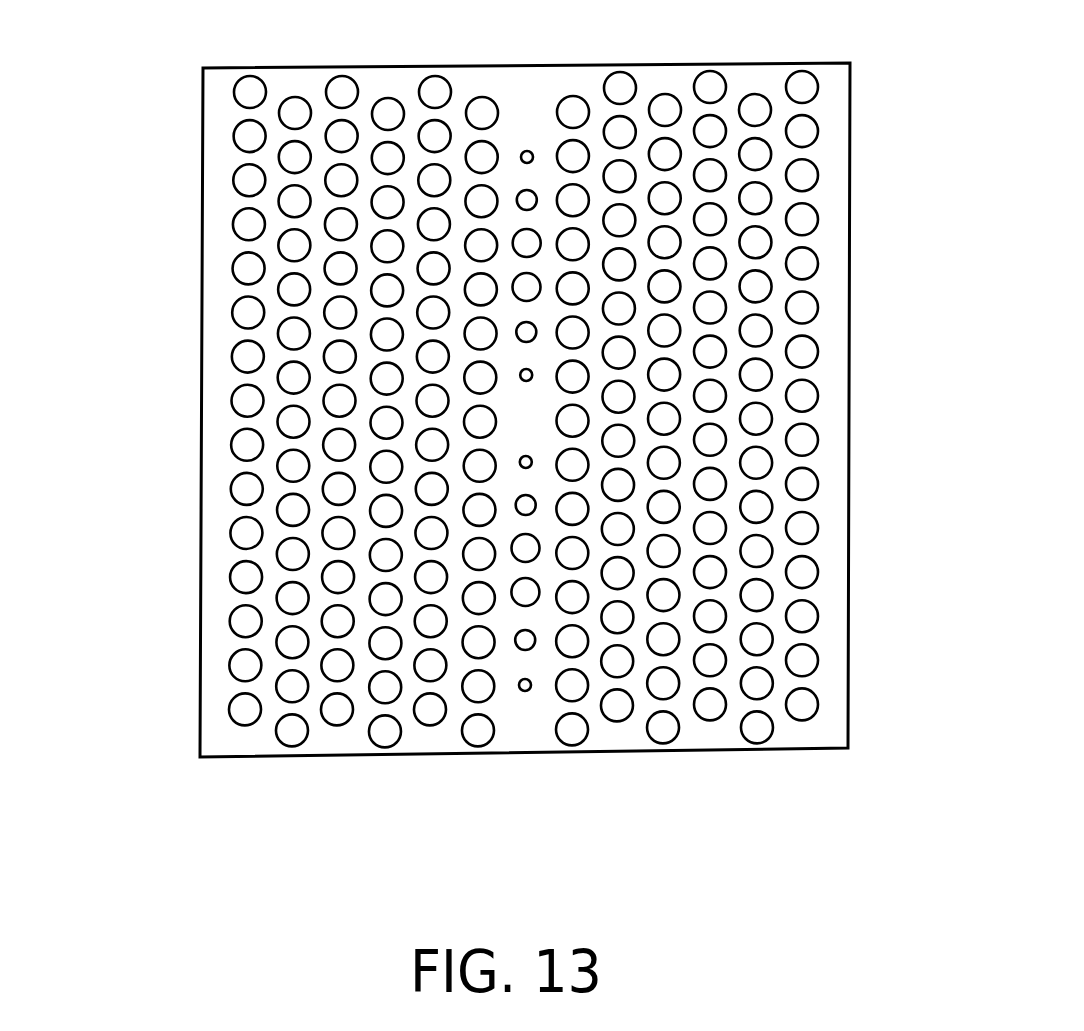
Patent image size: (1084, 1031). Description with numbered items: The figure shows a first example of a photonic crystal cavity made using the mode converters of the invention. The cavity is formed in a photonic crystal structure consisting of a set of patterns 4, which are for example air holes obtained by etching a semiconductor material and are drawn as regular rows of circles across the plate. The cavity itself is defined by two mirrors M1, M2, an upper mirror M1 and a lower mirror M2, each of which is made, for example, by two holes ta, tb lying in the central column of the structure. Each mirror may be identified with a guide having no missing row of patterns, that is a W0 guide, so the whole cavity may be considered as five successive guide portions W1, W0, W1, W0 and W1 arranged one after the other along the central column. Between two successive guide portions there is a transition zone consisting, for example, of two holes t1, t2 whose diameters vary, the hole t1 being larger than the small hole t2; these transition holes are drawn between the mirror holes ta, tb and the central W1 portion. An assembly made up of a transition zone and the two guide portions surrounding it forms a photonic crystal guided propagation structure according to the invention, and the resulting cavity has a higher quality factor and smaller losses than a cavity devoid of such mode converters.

The patterns 4 is at (806, 134).
The first mirror M1 is at (495, 270).
The second mirror M2 is at (497, 572).
The mirror hole ta is at (527, 243).
The mirror hole tb is at (527, 287).
The transition zone hole t1 is at (527, 331).
The transition zone hole t2 is at (532, 375).
The W0 guide portion W0 is at (535, 268).
The W1 guide portion W1 is at (527, 96).